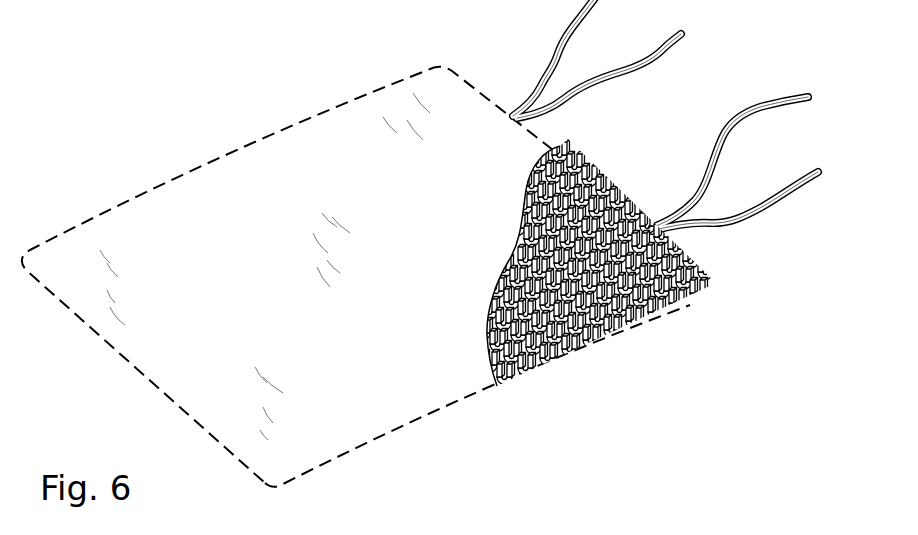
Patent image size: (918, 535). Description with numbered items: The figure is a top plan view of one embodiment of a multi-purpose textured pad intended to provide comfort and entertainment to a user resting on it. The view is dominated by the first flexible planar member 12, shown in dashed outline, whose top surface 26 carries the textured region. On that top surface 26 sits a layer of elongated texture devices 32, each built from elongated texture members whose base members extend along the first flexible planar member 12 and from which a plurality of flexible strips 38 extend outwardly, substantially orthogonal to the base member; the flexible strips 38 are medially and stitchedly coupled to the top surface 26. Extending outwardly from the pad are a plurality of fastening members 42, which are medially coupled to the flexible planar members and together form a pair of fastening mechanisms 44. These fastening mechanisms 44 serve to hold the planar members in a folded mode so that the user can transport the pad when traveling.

The first flexible planar member 12 is at (249, 134).
The top surface 26 is at (299, 270).
The elongated texture devices 32 is at (652, 353).
The flexible strips 38 is at (713, 275).
The fastening members 42 is at (741, 127).
The fastening mechanisms 44 is at (703, 168).